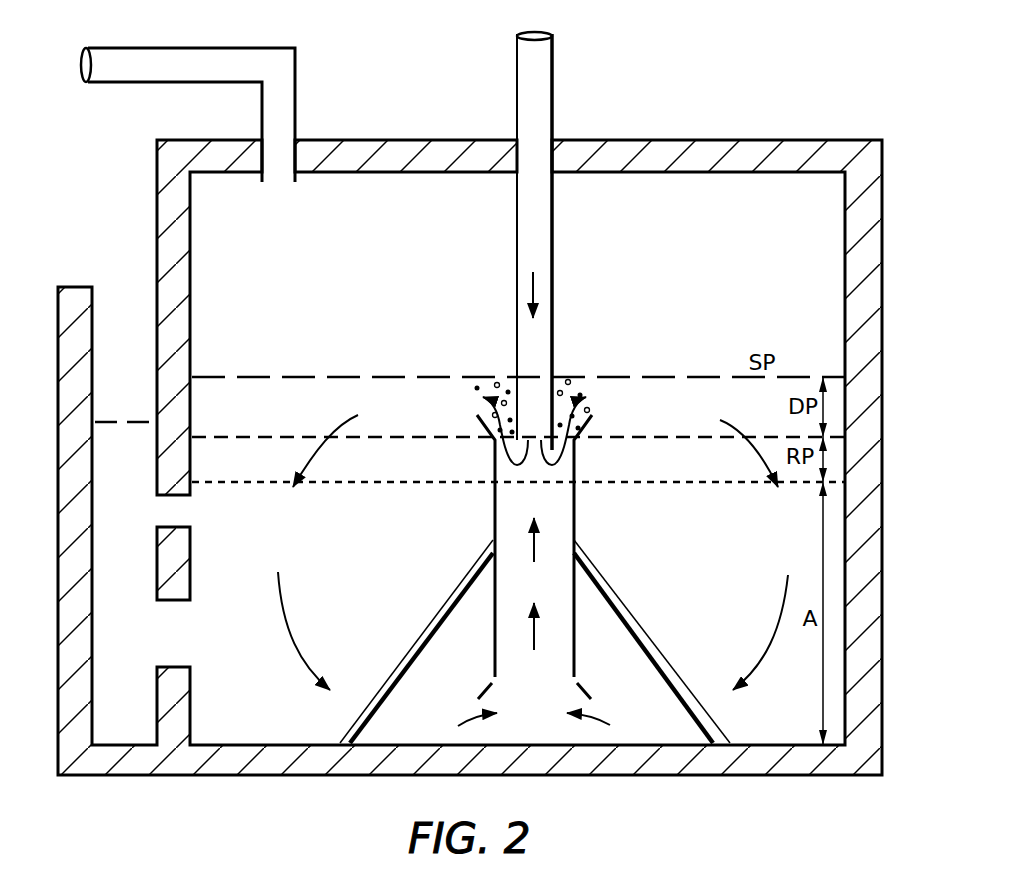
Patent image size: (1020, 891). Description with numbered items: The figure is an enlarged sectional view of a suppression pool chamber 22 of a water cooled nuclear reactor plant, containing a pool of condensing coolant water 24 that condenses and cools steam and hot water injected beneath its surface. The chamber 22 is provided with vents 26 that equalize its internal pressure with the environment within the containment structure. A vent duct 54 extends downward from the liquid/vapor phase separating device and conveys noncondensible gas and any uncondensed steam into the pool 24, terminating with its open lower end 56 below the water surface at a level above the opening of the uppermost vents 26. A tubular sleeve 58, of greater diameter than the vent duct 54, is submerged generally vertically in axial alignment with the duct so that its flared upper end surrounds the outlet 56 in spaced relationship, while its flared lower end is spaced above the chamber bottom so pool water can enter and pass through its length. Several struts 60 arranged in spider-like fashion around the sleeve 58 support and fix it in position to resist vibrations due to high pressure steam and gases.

The suppression pool chamber 22 is at (698, 126).
The pool of coolant water 24 is at (672, 540).
The vents 26 is at (165, 665).
The vent duct 54 is at (553, 305).
The open lower end of the vent duct 56 is at (542, 450).
The tubular sleeve 58 is at (494, 515).
The struts 60 is at (438, 610).